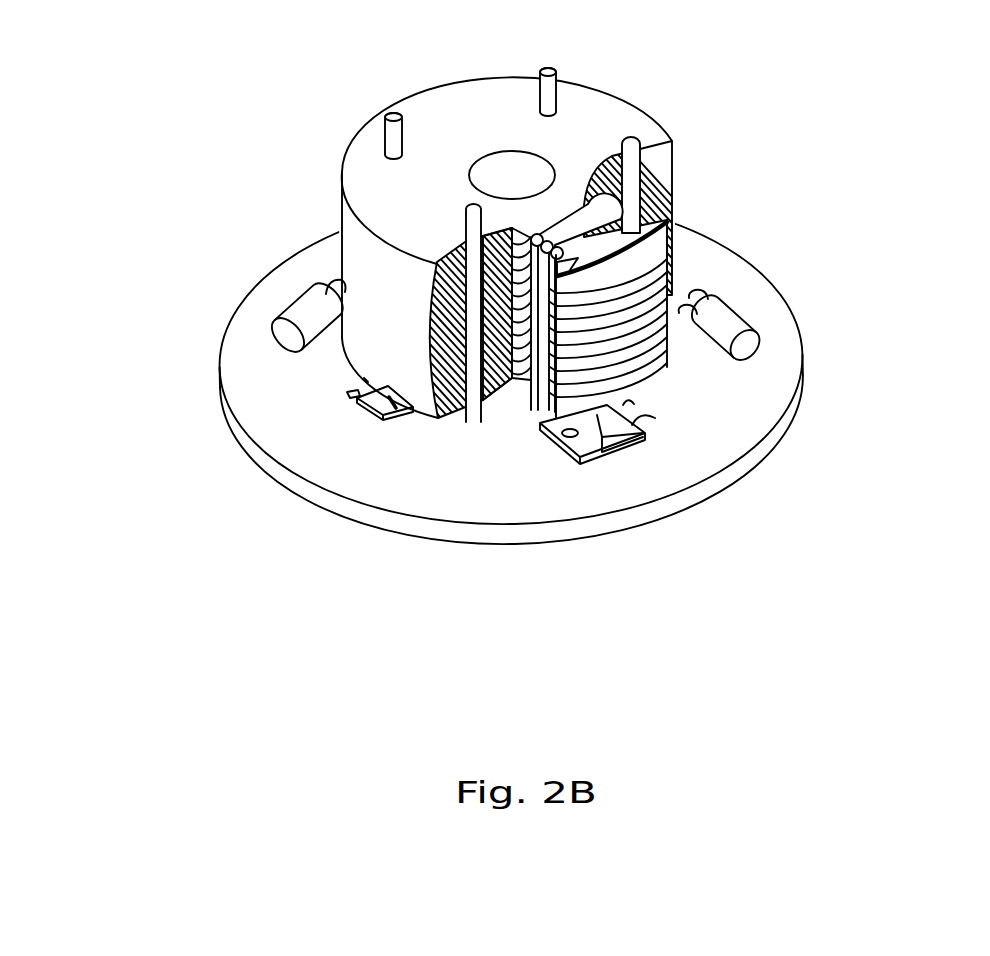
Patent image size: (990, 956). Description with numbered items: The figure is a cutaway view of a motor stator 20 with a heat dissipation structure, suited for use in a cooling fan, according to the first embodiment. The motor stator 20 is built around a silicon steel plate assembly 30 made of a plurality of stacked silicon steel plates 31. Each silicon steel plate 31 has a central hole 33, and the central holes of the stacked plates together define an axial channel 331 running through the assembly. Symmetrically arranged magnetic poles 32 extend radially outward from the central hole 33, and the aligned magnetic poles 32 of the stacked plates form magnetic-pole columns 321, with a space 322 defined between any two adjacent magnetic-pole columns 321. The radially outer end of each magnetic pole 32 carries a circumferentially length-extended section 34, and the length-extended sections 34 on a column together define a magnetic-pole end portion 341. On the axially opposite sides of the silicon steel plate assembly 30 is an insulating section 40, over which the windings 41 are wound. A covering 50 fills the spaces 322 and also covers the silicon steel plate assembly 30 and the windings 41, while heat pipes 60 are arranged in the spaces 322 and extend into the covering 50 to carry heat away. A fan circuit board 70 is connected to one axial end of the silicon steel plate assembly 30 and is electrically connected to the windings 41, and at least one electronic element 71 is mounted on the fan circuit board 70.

The motor stator 20 is at (793, 122).
The silicon steel plate assembly 30 is at (693, 374).
The silicon steel plate 31 is at (522, 232).
The magnetic pole 32 is at (557, 235).
The magnetic-pole column 321 is at (517, 381).
The space 322 is at (497, 394).
The central hole 33 is at (512, 150).
The axial channel 331 is at (503, 175).
The length-extended section 34 is at (640, 260).
The magnetic-pole end portion 341 is at (647, 388).
The insulating section 40 is at (655, 212).
The windings 41 is at (640, 243).
The covering 50 is at (447, 263).
The heat pipes 60 is at (465, 207).
The fan circuit board 70 is at (235, 347).
The electronic element 71 is at (307, 315).